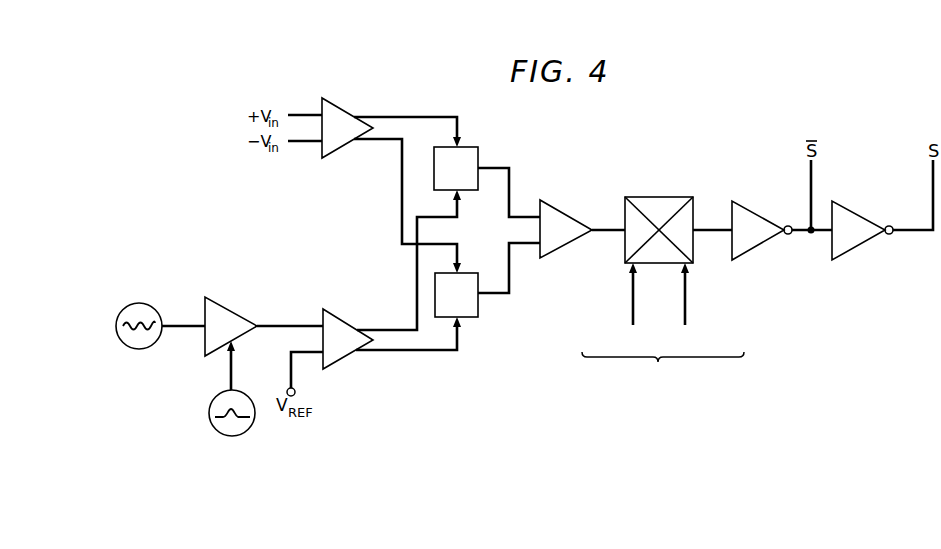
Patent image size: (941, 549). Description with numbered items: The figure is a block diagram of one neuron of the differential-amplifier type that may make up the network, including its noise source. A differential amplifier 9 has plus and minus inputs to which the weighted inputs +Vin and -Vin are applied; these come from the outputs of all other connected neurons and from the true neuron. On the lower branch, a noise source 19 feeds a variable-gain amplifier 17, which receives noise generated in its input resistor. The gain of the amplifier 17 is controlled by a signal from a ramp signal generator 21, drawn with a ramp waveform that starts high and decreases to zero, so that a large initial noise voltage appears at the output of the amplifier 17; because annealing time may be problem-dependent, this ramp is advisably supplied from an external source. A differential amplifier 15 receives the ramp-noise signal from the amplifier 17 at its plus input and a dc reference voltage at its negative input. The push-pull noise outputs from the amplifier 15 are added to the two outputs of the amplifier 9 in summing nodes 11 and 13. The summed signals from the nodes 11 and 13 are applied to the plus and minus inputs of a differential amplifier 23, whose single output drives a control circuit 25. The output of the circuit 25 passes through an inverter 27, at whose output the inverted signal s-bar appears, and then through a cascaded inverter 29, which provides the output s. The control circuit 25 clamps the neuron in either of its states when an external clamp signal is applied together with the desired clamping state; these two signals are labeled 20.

The differential amplifier 9 is at (336, 103).
The summing node 11 is at (476, 147).
The summing node 13 is at (470, 273).
The differential amplifier 15 is at (351, 304).
The variable-gain amplifier 17 is at (245, 297).
The triangular wave oscillator 19 is at (152, 309).
The ramp signal generator 21 is at (245, 393).
The differential amplifier 23 is at (572, 199).
The control circuit 25 is at (664, 197).
The inverter 27 is at (762, 199).
The inverter 29 is at (855, 210).
The clamp and desired-state signals 20 is at (663, 361).